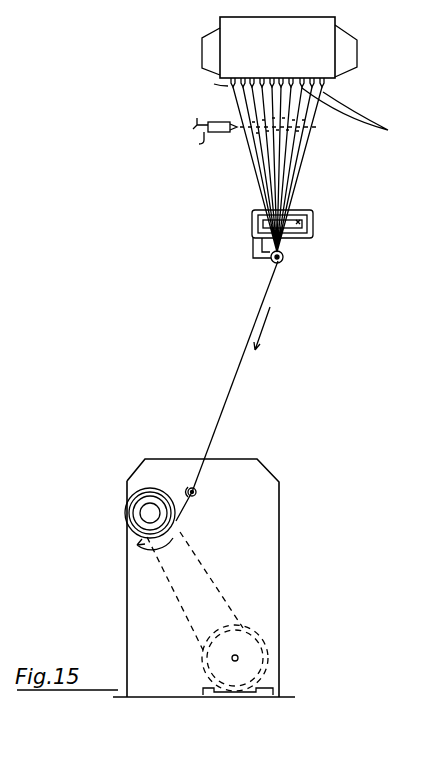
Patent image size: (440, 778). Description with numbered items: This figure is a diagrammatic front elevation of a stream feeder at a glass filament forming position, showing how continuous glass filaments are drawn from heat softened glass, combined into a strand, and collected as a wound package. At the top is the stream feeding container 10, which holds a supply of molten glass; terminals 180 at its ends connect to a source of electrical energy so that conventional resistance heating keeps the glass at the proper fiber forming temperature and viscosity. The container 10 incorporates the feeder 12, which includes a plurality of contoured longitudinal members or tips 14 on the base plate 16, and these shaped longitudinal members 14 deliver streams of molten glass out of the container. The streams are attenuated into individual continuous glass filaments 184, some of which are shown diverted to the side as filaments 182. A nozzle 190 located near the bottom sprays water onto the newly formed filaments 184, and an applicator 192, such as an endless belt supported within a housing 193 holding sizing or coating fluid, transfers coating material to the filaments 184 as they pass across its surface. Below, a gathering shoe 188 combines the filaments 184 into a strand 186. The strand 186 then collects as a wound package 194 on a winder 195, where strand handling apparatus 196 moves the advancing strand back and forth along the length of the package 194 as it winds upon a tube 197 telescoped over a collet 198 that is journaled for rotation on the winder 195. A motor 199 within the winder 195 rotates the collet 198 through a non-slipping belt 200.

The stream feeding container 10 is at (212, 18).
The terminals 180 is at (208, 48).
The feeder 12 is at (328, 80).
The base plate 16 is at (228, 86).
The contoured longitudinal members 14 is at (240, 91).
The diverted yarn ends 182 is at (365, 115).
The nozzle 190 is at (220, 134).
The continuous glass filaments 184 is at (305, 158).
The applicator 192 is at (308, 211).
The housing 193 is at (295, 212).
The gathering shoe 188 is at (271, 259).
The strand 186 is at (268, 284).
The winder 195 is at (237, 458).
The strand handling apparatus 196 is at (197, 492).
The wound package 194 is at (147, 488).
The tube 197 is at (134, 507).
The collet 198 is at (134, 518).
The non-slipping belt 200 is at (227, 597).
The motor 199 is at (262, 638).